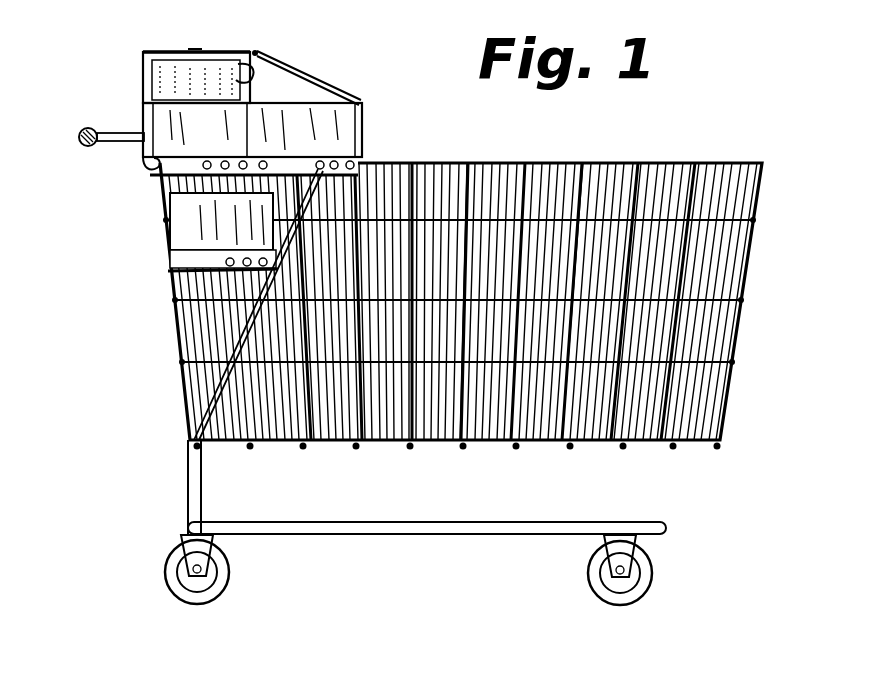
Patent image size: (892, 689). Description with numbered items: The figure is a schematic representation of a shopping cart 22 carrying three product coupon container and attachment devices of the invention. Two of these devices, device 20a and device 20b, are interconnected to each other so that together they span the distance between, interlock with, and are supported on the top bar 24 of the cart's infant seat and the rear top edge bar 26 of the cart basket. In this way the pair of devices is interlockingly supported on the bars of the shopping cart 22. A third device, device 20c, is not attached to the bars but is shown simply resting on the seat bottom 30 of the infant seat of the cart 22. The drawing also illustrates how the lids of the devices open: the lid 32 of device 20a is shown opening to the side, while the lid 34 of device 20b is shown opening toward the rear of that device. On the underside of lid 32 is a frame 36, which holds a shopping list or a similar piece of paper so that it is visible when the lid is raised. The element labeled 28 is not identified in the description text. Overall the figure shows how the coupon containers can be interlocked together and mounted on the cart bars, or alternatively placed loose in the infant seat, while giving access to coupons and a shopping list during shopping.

The product coupon container and attachment device 20a is at (146, 79).
The product coupon container and attachment device 20b is at (362, 127).
The product coupon container and attachment device 20c is at (196, 225).
The shopping cart 22 is at (748, 258).
The top bar 24 is at (324, 164).
The rear top edge bar 26 is at (149, 163).
The lever knob 28 is at (75, 142).
The seat bottom 30 is at (202, 279).
The lid 32 is at (179, 52).
The lid 34 is at (300, 72).
The frame 36 is at (244, 62).